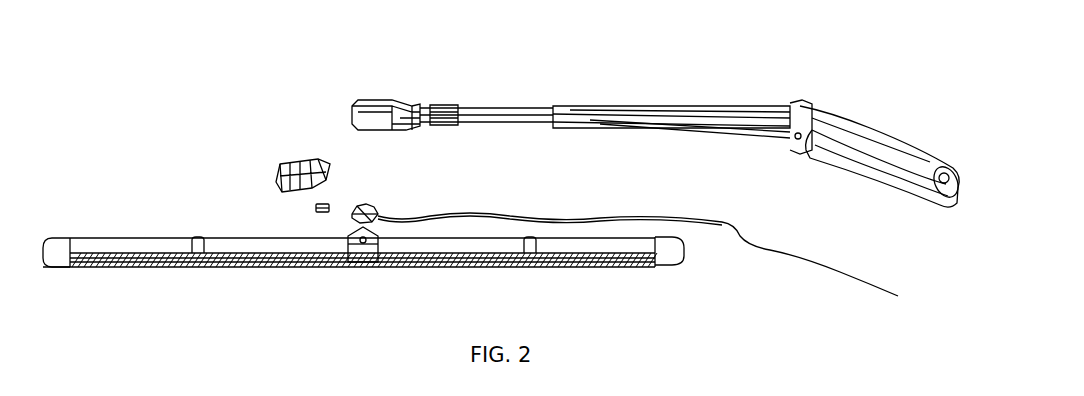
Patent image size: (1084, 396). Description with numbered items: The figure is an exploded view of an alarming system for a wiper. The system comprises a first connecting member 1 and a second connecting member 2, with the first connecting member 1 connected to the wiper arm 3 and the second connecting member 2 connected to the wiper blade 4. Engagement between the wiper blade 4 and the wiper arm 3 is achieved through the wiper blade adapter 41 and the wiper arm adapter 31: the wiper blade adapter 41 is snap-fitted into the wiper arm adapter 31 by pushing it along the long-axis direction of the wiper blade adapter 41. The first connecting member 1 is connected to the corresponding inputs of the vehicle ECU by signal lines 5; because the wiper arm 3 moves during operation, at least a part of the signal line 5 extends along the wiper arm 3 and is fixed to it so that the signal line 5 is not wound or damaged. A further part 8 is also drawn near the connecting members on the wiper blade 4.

The first connecting member 1 is at (372, 212).
The second connecting member 2 is at (312, 208).
The wiper arm 3 is at (738, 118).
The wiper blade 4 is at (141, 246).
The signal lines 5 is at (812, 250).
The connector base 8 is at (433, 244).
The wiper arm adapter 31 is at (372, 112).
The wiper blade adapter 41 is at (278, 166).